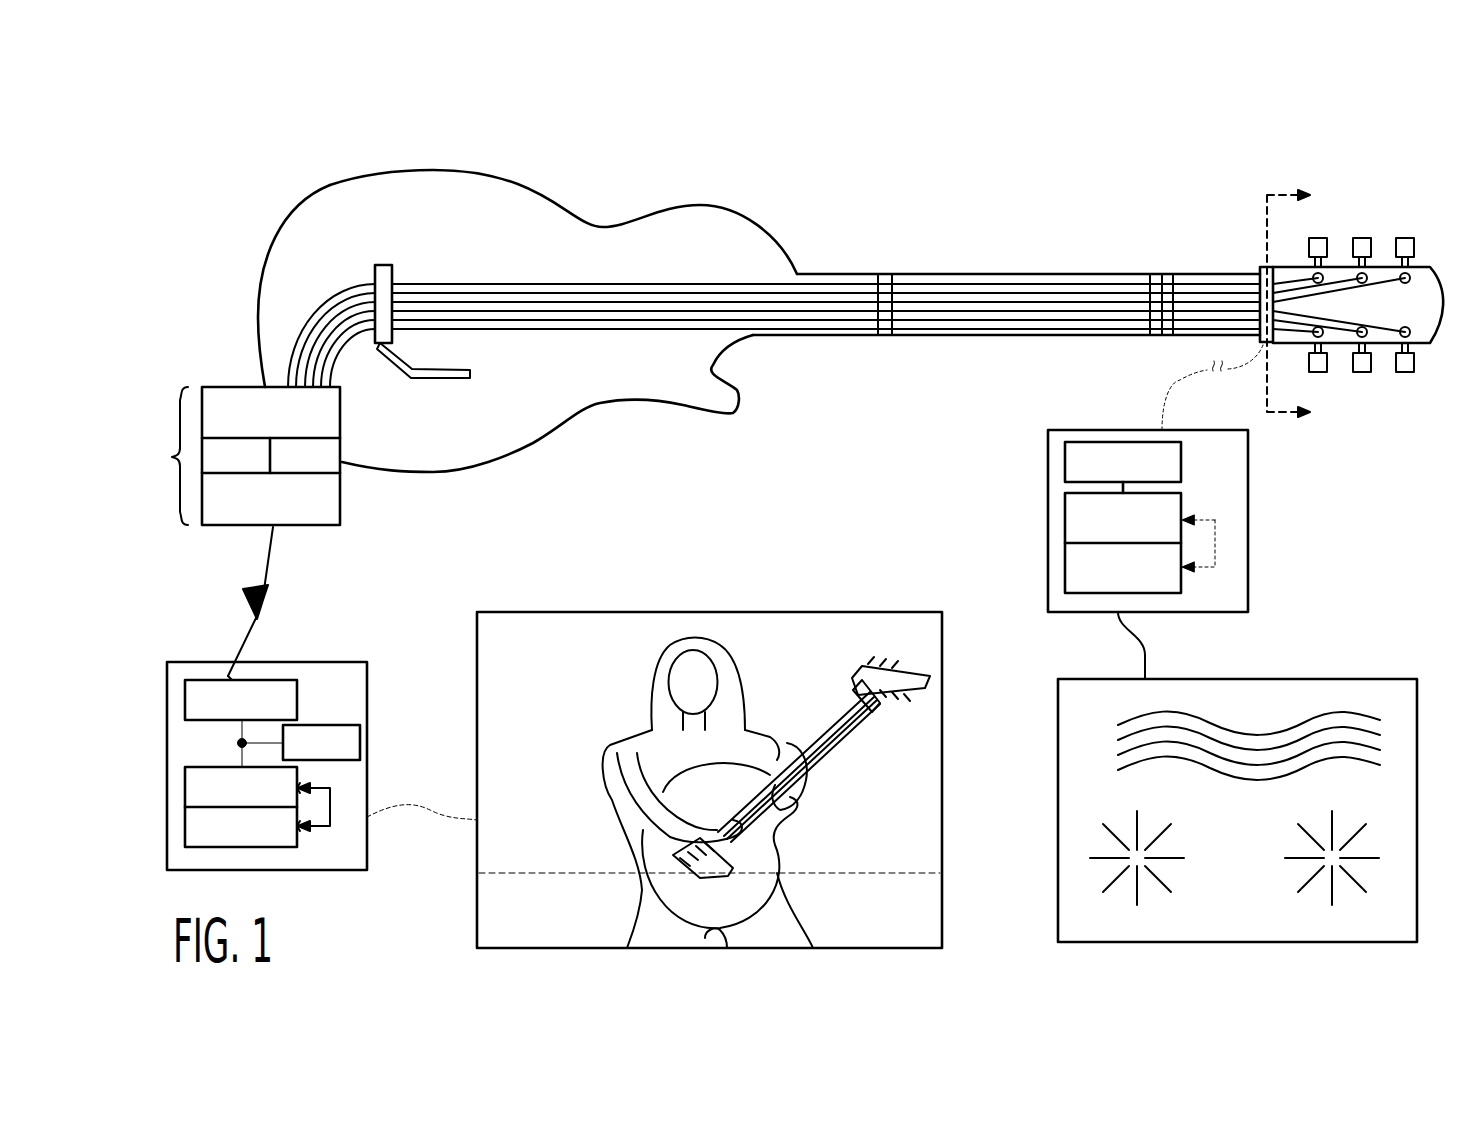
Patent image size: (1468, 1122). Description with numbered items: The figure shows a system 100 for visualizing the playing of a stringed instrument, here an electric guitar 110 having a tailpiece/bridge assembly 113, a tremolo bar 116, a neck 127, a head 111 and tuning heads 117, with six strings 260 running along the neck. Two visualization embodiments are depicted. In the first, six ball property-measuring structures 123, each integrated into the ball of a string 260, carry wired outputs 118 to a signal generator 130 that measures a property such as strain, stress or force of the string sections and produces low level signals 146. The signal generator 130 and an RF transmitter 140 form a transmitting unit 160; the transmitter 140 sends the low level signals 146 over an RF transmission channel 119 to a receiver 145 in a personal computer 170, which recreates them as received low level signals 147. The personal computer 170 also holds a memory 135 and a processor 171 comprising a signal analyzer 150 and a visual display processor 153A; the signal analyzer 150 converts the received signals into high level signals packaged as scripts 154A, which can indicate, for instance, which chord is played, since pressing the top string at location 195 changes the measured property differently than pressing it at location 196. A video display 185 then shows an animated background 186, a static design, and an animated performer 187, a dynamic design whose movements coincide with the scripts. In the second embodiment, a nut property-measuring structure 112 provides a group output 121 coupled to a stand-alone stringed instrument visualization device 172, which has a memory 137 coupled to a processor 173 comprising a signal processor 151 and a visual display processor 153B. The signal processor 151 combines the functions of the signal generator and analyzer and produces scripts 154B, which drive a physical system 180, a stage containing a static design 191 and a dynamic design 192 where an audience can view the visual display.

The system 100 is at (1381, 190).
The electric guitar 110 is at (247, 211).
The head 111 is at (1423, 297).
The nut property-measuring structure 112 is at (1262, 266).
The tailpiece/bridge assembly 113 is at (388, 265).
The tremolo bar 116 is at (411, 380).
The tuning heads 117 is at (1405, 237).
The wired outputs 118 is at (297, 292).
The RF transmission channel 119 is at (268, 594).
The group output 121 is at (1180, 380).
The ball property-measuring structures 123 is at (368, 274).
The neck 127 is at (1048, 273).
The signal generator 130 is at (284, 425).
The memory 135 is at (335, 756).
The memory 137 is at (1136, 474).
The transmitter 140 is at (284, 514).
The receiver 145 is at (255, 711).
The low level signals 146 is at (272, 458).
The received low level signals 147 is at (218, 737).
The signal analyzer 150 is at (255, 800).
The signal processor 151 is at (1136, 530).
The visual display processor 153A is at (261, 841).
The visual display processor 153B is at (1142, 581).
The scripts 154A is at (330, 791).
The scripts 154B is at (1215, 542).
The transmitting unit 160 is at (237, 456).
The personal computer 170 is at (348, 703).
The processor 171 is at (200, 767).
The stand-alone stringed instrument visualization device 172 is at (1234, 470).
The processor 173 is at (1065, 493).
The physical system 180 is at (1312, 679).
The video display 185 is at (688, 612).
The animated background 186 is at (518, 903).
The animated performer 187 is at (772, 676).
The static design 191 is at (1088, 729).
The dynamic design 192 is at (1088, 839).
The location 195 is at (883, 275).
The location 196 is at (1160, 274).
The strings 260 is at (1028, 338).